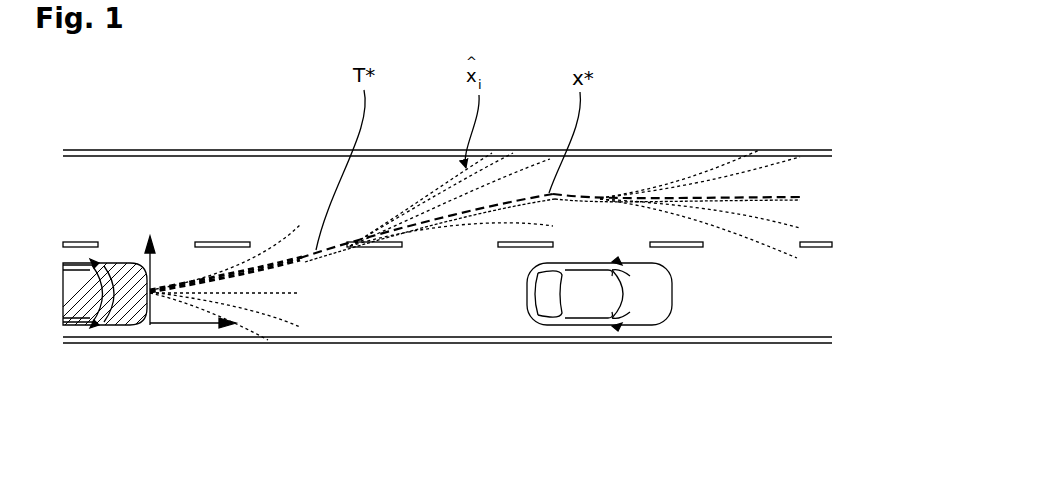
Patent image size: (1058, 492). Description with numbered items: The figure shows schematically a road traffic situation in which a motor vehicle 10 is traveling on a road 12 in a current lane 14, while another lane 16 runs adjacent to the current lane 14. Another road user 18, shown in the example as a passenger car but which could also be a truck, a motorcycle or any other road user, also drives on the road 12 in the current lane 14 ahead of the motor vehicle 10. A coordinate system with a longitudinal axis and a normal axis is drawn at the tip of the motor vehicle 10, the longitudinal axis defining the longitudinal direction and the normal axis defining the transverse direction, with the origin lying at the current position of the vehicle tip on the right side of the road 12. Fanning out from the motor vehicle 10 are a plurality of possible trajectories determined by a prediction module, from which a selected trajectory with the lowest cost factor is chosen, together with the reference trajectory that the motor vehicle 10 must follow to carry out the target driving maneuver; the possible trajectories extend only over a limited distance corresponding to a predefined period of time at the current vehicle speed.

The motor vehicle 10 is at (137, 330).
The road 12 is at (240, 147).
The current lane 14 is at (815, 285).
The other lane 16 is at (815, 213).
The other road user 18 is at (643, 310).